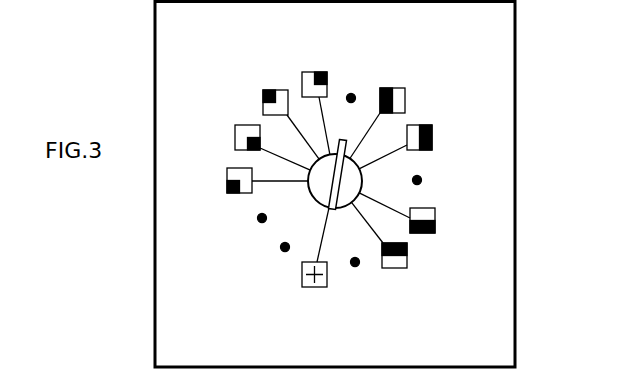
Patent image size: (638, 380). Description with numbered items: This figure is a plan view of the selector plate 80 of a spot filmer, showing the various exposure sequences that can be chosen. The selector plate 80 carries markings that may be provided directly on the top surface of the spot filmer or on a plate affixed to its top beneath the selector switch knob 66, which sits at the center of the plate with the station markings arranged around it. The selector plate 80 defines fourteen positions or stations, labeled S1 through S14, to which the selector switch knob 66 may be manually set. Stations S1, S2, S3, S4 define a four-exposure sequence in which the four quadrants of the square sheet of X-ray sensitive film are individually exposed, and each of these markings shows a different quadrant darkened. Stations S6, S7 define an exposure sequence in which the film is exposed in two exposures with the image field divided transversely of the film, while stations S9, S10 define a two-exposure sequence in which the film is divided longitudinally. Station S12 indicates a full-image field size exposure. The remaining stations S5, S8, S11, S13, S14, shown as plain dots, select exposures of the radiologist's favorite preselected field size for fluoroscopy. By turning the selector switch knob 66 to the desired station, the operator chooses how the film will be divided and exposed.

The selector plate 80 is at (515, 205).
The selector switch knob 66 is at (315, 195).
The station S1 is at (227, 181).
The station S2 is at (235, 136).
The station S3 is at (263, 97).
The station S4 is at (314, 72).
The station S5 is at (351, 93).
The station S6 is at (405, 95).
The station S7 is at (432, 135).
The station S8 is at (422, 180).
The station S9 is at (435, 222).
The station S10 is at (407, 262).
The station S11 is at (357, 267).
The station S12 is at (313, 287).
The station S13 is at (283, 252).
The station S14 is at (258, 221).